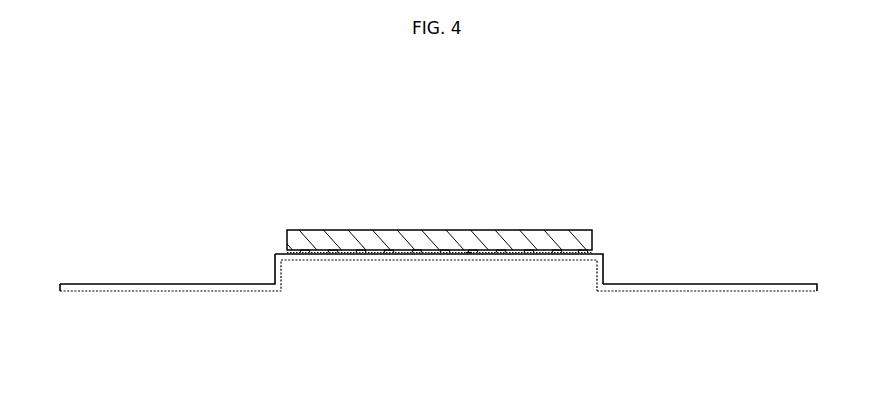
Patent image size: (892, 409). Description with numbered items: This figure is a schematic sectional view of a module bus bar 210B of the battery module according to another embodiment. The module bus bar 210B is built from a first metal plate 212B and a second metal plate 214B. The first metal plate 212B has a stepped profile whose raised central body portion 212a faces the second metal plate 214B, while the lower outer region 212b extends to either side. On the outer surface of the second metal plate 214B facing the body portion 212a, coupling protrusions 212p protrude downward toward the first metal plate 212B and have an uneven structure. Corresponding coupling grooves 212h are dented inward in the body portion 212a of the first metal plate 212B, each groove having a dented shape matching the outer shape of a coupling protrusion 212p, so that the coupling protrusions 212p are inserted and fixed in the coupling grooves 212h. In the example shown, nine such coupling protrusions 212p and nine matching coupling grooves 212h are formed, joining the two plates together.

The module bus bar 210B is at (224, 148).
The first metal plate 212B is at (400, 337).
The body portion 212a is at (368, 261).
The flat second portion of substrate 212b is at (195, 293).
The second metal plate 214B is at (368, 230).
The coupling protrusion 212p is at (438, 255).
The coupling groove 212h is at (470, 250).